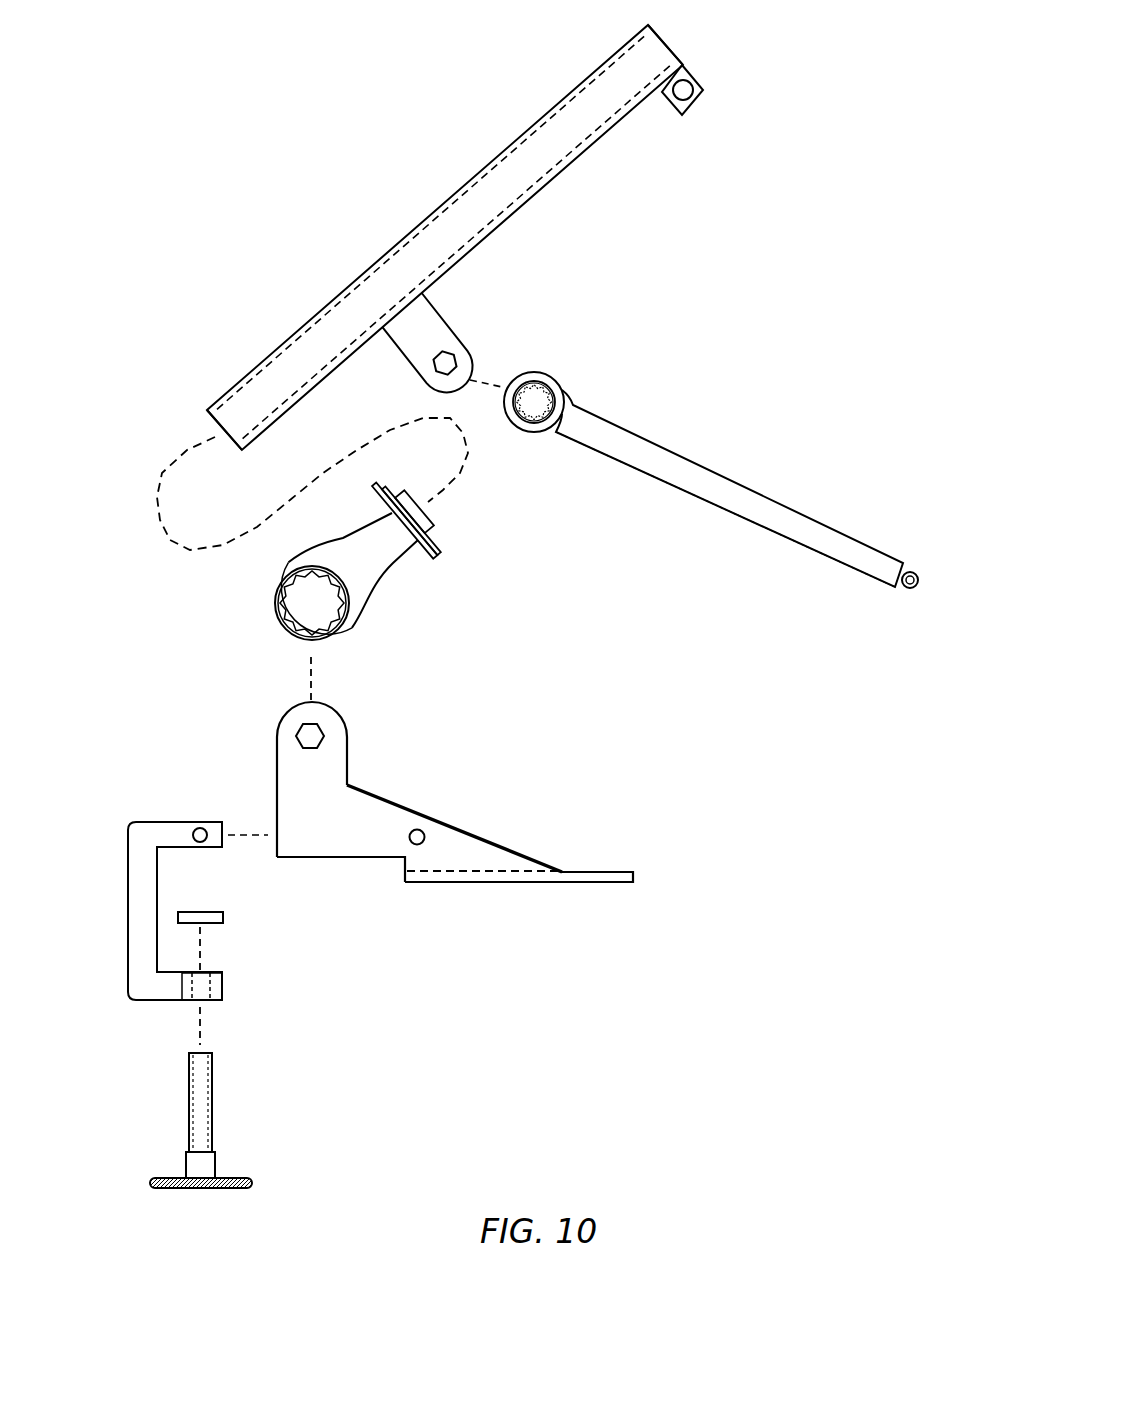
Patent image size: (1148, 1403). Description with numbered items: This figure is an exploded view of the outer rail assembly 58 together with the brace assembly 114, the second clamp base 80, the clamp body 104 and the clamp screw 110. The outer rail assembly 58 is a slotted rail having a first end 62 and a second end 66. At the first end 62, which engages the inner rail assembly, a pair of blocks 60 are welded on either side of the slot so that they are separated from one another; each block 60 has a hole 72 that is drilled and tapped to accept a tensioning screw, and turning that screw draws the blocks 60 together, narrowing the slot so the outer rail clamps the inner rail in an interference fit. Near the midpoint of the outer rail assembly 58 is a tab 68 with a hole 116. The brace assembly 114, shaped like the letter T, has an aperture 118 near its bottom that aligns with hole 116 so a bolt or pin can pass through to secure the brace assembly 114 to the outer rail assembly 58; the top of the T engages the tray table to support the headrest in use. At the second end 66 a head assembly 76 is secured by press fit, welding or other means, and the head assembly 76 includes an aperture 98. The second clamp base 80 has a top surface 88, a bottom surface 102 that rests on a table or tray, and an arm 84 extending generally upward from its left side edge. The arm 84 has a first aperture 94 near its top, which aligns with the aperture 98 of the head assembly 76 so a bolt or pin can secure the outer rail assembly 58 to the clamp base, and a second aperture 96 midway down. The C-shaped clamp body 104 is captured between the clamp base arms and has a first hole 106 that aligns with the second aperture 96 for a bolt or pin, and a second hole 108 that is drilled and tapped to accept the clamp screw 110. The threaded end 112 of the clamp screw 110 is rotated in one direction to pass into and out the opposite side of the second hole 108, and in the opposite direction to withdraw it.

The outer rail assembly 58 is at (470, 233).
The block 60 is at (688, 93).
The first end 62 is at (673, 53).
The second end 66 is at (227, 410).
The tab 68 is at (435, 332).
The hole 72 is at (693, 92).
The head assembly 76 is at (365, 578).
The second clamp base 80 is at (485, 848).
The arm 84 is at (330, 775).
The top surface 88 is at (597, 872).
The first aperture 94 is at (317, 733).
The second aperture 96 is at (423, 837).
The aperture 98 is at (322, 612).
The bottom surface 102 is at (580, 882).
The clamp body 104 is at (142, 835).
The first hole 106 is at (198, 830).
The second hole 108 is at (207, 967).
The clamp screw 110 is at (213, 918).
The threaded end 112 is at (202, 1095).
The brace assembly 114 is at (632, 447).
The hole 116 is at (458, 360).
The aperture 118 is at (533, 405).